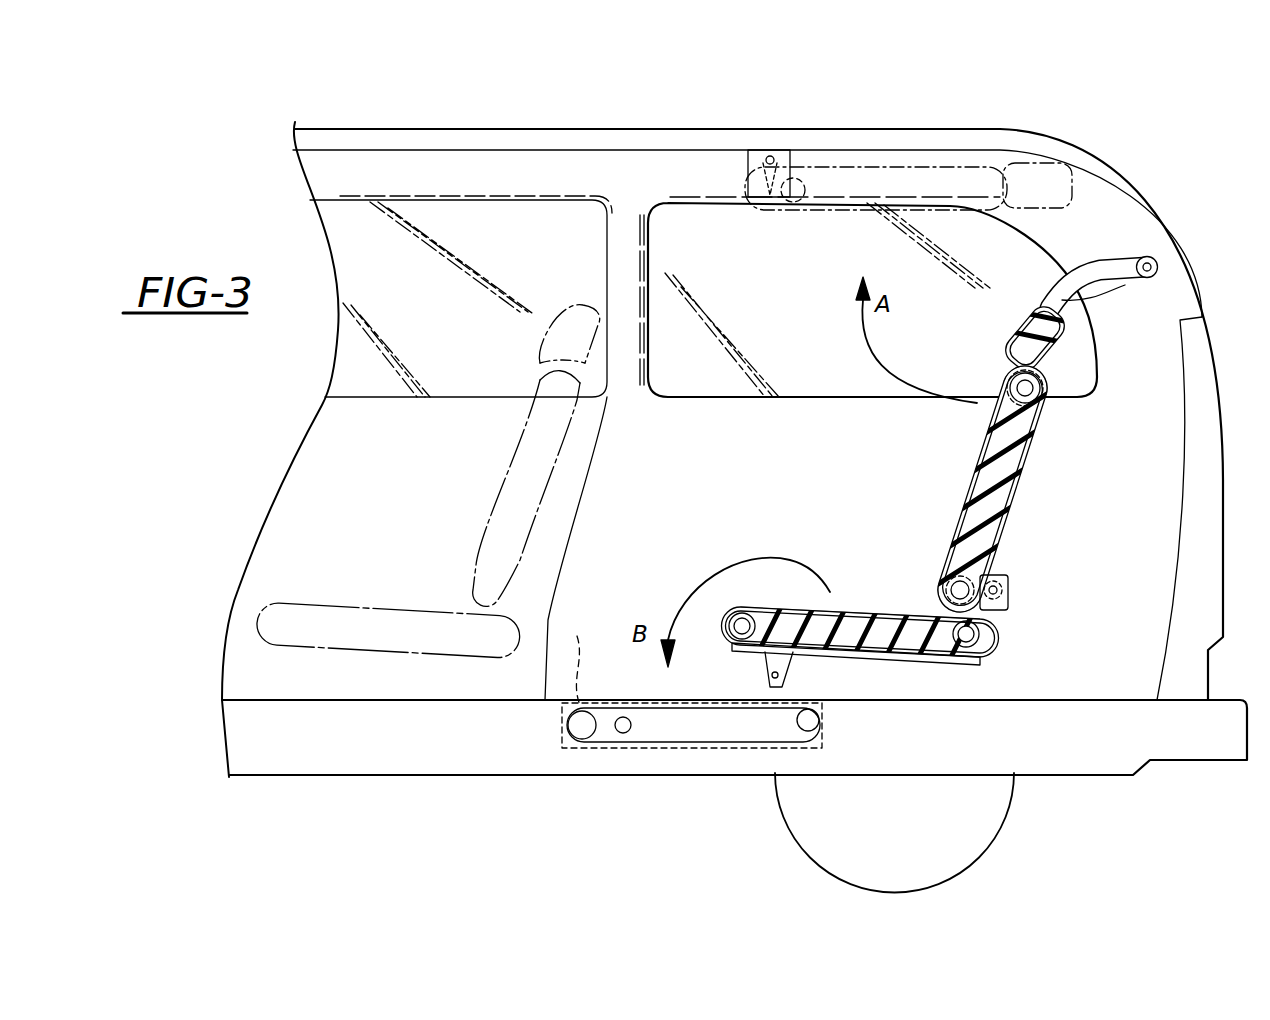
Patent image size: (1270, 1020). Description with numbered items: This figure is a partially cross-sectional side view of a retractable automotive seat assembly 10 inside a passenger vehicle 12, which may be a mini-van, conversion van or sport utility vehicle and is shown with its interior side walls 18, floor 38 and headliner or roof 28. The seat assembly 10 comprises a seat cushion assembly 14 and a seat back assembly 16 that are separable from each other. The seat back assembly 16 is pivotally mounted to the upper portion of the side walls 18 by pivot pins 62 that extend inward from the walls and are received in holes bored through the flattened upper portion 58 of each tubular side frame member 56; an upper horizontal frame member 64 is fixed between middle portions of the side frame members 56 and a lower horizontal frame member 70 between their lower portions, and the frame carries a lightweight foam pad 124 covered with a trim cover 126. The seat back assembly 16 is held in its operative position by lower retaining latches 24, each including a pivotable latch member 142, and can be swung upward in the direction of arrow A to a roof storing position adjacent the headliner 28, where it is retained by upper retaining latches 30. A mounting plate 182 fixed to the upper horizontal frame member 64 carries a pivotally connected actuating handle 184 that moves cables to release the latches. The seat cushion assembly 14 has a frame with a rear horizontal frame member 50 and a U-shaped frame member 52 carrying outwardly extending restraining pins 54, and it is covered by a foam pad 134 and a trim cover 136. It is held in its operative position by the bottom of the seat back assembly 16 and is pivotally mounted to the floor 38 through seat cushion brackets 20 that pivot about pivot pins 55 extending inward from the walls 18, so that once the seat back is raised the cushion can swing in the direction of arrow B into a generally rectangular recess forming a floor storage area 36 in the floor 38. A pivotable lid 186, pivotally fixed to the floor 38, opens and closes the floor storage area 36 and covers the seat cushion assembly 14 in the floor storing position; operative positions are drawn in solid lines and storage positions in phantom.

The retractable automotive seat assembly 10 is at (1100, 657).
The passenger vehicle 12 is at (460, 782).
The seat cushion assembly 14 is at (900, 667).
The seat back assembly 16 is at (1028, 479).
The interior side walls 18 is at (647, 178).
The seat cushion brackets 20 is at (772, 675).
The lower retaining latches 24 is at (1013, 593).
The headliner 28 is at (708, 153).
The upper retaining latches 30 is at (777, 150).
The floor storage area 36 is at (690, 752).
The floor 38 is at (1098, 700).
The rear horizontal frame member 50 is at (565, 720).
The U-shaped frame member 52 is at (740, 616).
The restraining pins 54 is at (620, 748).
The pivot pins 55 is at (780, 677).
The side frame members 56 is at (1108, 252).
The upper portion 58 is at (1125, 285).
The pivot pins 62 is at (1150, 265).
The upper horizontal frame member 64 is at (1010, 372).
The lower horizontal frame member 70 is at (960, 560).
The foam pad 124 is at (985, 474).
The trim cover 126 is at (1003, 426).
The foam pad 134 is at (850, 603).
The trim cover 136 is at (893, 612).
The latch member 142 is at (790, 200).
The mounting plate 182 is at (1043, 407).
The actuating handle 184 is at (1030, 388).
The pivotable lid 186 is at (575, 656).